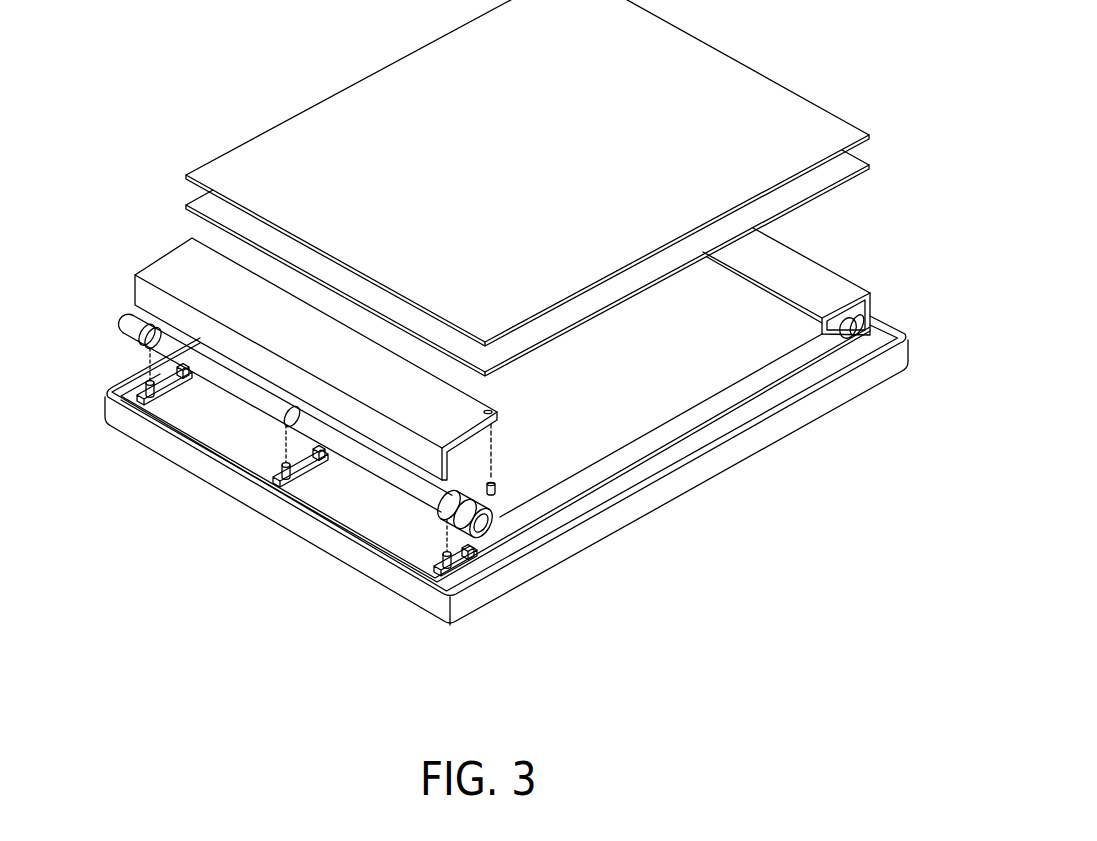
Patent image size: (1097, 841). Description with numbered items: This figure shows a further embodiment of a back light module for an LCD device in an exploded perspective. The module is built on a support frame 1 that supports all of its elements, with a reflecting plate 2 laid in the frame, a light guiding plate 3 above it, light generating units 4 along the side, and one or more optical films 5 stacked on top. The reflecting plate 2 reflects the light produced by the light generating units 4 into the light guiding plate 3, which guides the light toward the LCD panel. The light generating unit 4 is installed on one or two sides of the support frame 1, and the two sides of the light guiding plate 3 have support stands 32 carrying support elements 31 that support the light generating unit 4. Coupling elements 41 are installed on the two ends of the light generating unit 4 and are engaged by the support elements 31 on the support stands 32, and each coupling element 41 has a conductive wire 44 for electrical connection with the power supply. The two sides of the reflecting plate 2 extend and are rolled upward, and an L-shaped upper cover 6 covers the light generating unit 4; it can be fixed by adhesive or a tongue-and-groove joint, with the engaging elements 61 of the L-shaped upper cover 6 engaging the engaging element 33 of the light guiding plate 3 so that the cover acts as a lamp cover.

The support frame 1 is at (850, 383).
The reflecting plate 2 is at (760, 395).
The light guiding plate 3 is at (735, 298).
The light generating unit 4 is at (323, 438).
The optical film 5 is at (698, 85).
The L-shaped upper cover 6 is at (185, 263).
The support element 31 is at (441, 569).
The support stand 32 is at (460, 568).
The engaging element 33 is at (493, 482).
The coupling element 41 is at (872, 318).
The conductive wire 44 is at (516, 546).
The engaging element 61 is at (500, 412).